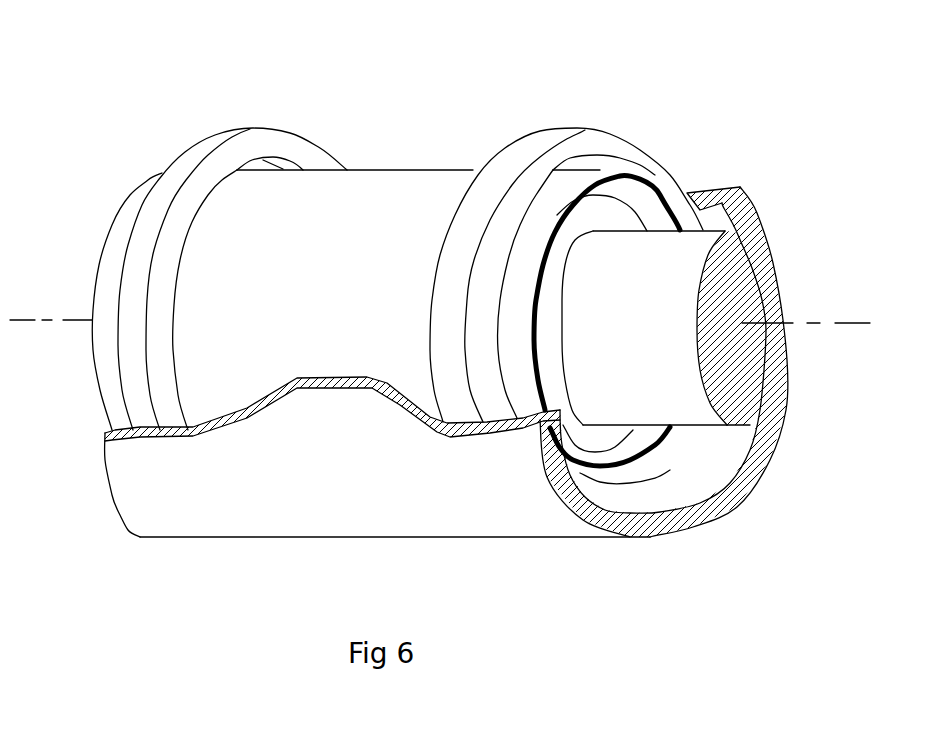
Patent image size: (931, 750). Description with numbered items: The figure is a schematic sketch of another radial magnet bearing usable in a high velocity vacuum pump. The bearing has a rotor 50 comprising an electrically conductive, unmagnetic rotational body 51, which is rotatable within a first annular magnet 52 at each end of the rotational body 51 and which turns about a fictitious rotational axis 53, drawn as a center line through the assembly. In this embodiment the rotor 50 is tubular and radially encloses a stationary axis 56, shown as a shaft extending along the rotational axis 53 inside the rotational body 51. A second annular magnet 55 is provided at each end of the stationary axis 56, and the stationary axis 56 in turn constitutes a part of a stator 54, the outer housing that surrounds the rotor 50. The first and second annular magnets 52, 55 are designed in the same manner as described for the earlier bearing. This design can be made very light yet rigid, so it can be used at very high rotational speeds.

The rotor 50 is at (137, 114).
The rotational body 51 is at (363, 223).
The first annular magnet 52 is at (283, 140).
The rotational axis 53 is at (855, 323).
The stator 54 is at (495, 483).
The second annular magnet 55 is at (593, 218).
The stationary axis 56 is at (660, 370).